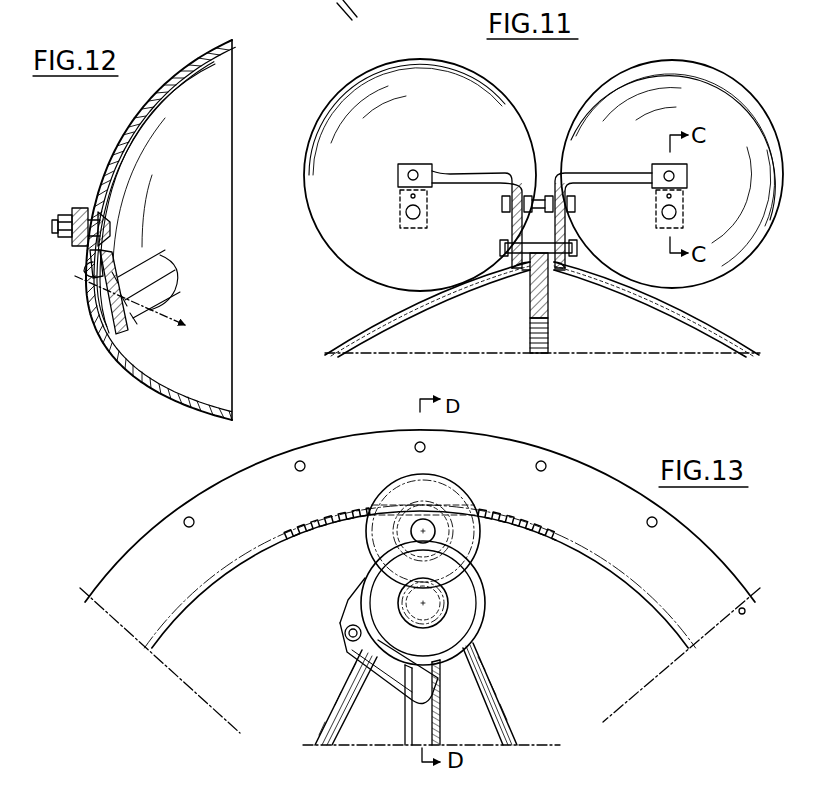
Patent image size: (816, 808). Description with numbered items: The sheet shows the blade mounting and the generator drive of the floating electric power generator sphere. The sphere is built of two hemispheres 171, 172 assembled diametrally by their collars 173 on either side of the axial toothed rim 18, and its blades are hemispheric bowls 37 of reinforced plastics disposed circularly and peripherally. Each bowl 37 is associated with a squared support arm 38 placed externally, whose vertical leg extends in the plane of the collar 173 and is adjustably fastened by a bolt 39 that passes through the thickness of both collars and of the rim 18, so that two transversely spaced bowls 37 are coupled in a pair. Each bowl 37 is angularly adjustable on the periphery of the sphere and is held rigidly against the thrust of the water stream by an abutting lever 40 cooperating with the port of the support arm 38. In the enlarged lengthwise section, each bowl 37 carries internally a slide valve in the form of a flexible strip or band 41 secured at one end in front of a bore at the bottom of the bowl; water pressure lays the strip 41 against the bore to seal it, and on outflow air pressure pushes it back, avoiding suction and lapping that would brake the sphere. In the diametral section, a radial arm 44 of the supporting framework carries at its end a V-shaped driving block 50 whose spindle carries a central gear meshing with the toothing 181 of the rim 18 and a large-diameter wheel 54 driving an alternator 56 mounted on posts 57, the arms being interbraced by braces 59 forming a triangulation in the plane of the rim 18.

In FIG. 11, the hemisphere 171 is at (357, 329).
In FIG. 11, the hemisphere 172 is at (718, 329).
In FIG. 11, the collar 173 is at (487, 270).
In FIG. 11, the axial toothed rim 18 is at (541, 297).
In FIG. 13, the axial toothed rim 18 is at (550, 462).
In FIG. 13, the toothing 181 is at (500, 523).
In FIG. 12, the hemispheric bowl 37 is at (100, 160).
In FIG. 11, the hemispheric bowl 37 is at (470, 102).
In FIG. 12, the squared support arm 38 is at (78, 208).
In FIG. 11, the squared support arm 38 is at (560, 175).
In FIG. 11, the bolt 39 is at (577, 252).
In FIG. 11, the abutting lever 40 is at (576, 205).
In FIG. 12, the flexible strip or band 41 is at (162, 298).
In FIG. 13, the radial arm 44 is at (425, 713).
In FIG. 13, the driving block 50 is at (427, 531).
In FIG. 13, the wheel of large diameter 54 is at (443, 493).
In FIG. 13, the alternator 56 is at (463, 607).
In FIG. 13, the post 57 is at (400, 688).
In FIG. 13, the brace 59 is at (482, 683).